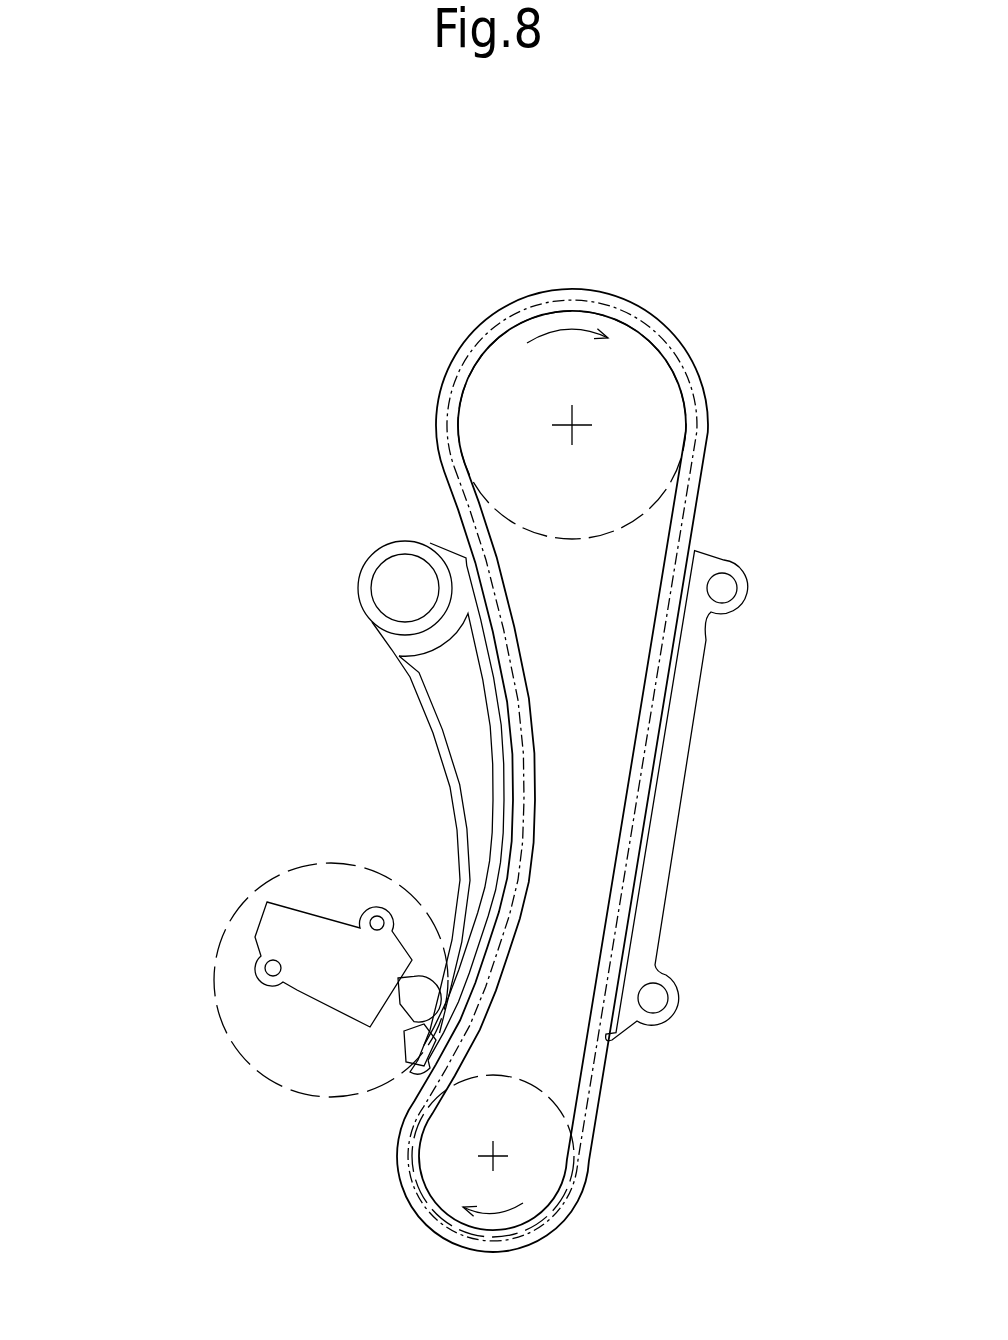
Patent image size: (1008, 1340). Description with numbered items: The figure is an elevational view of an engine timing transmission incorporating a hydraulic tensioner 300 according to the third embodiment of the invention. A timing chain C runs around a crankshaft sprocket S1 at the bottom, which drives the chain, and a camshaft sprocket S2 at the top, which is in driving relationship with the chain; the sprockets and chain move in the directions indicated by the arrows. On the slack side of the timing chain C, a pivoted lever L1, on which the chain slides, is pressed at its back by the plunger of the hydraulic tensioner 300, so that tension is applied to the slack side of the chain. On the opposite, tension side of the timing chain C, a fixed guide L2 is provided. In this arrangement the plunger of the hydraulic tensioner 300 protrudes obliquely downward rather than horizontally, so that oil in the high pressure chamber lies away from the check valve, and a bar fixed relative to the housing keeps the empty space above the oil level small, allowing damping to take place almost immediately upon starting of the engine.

The timing chain C is at (675, 315).
The camshaft sprocket S2 is at (645, 412).
The crankshaft sprocket S1 is at (533, 1164).
The pivoted lever L1 is at (438, 747).
The fixed guide L2 is at (688, 773).
The hydraulic tensioner 300 is at (252, 939).